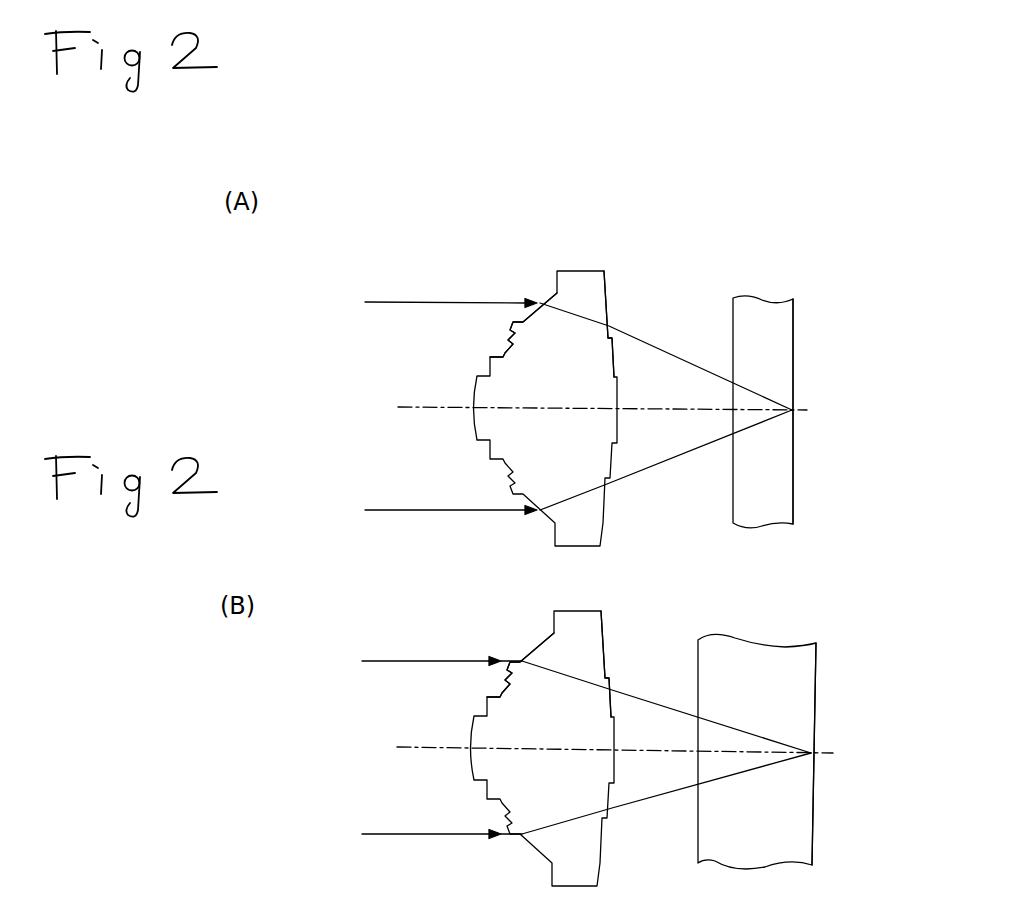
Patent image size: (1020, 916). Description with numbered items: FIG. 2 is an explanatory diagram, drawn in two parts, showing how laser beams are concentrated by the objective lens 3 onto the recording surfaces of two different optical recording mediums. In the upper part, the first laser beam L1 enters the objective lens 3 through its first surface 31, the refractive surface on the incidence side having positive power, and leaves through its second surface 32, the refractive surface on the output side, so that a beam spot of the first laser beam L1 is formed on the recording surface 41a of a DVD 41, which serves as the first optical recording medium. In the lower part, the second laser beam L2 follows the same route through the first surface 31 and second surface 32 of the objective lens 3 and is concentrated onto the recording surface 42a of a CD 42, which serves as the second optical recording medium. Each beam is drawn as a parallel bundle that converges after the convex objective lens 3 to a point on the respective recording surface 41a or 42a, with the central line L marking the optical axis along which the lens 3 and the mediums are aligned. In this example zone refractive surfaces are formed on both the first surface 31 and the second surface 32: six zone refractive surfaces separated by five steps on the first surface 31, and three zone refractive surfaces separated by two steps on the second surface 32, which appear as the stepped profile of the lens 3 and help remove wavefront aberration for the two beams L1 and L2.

The objective lens 3 is at (583, 266).
The first surface 31 is at (497, 346).
The second surface 32 is at (616, 313).
The DVD 41 is at (764, 331).
The recording surface 41a is at (795, 330).
The CD 42 is at (761, 674).
The recording surface 42a is at (817, 663).
The optical axis L is at (431, 408).
The first laser beam L1 is at (352, 302).
The second laser beam L2 is at (348, 657).